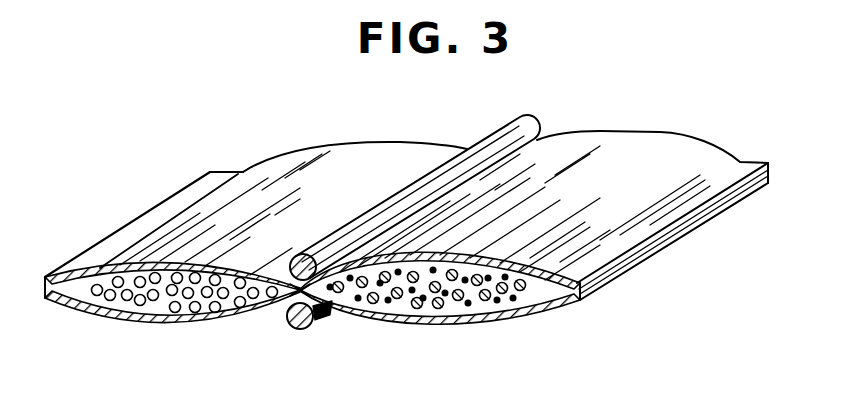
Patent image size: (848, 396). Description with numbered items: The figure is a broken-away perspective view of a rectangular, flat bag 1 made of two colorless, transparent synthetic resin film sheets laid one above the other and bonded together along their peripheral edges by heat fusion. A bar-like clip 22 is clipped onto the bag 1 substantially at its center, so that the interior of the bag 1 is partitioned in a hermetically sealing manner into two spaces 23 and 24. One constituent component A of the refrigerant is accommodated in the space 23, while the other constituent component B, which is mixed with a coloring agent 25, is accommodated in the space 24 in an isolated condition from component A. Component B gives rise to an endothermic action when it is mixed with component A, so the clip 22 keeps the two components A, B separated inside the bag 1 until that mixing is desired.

The bag 1 is at (358, 163).
The bar-like clip 22 is at (537, 122).
The space 23 is at (127, 306).
The space 24 is at (532, 290).
The coloring agent 25 is at (358, 303).
The constituent component A is at (195, 313).
The constituent component B is at (443, 306).